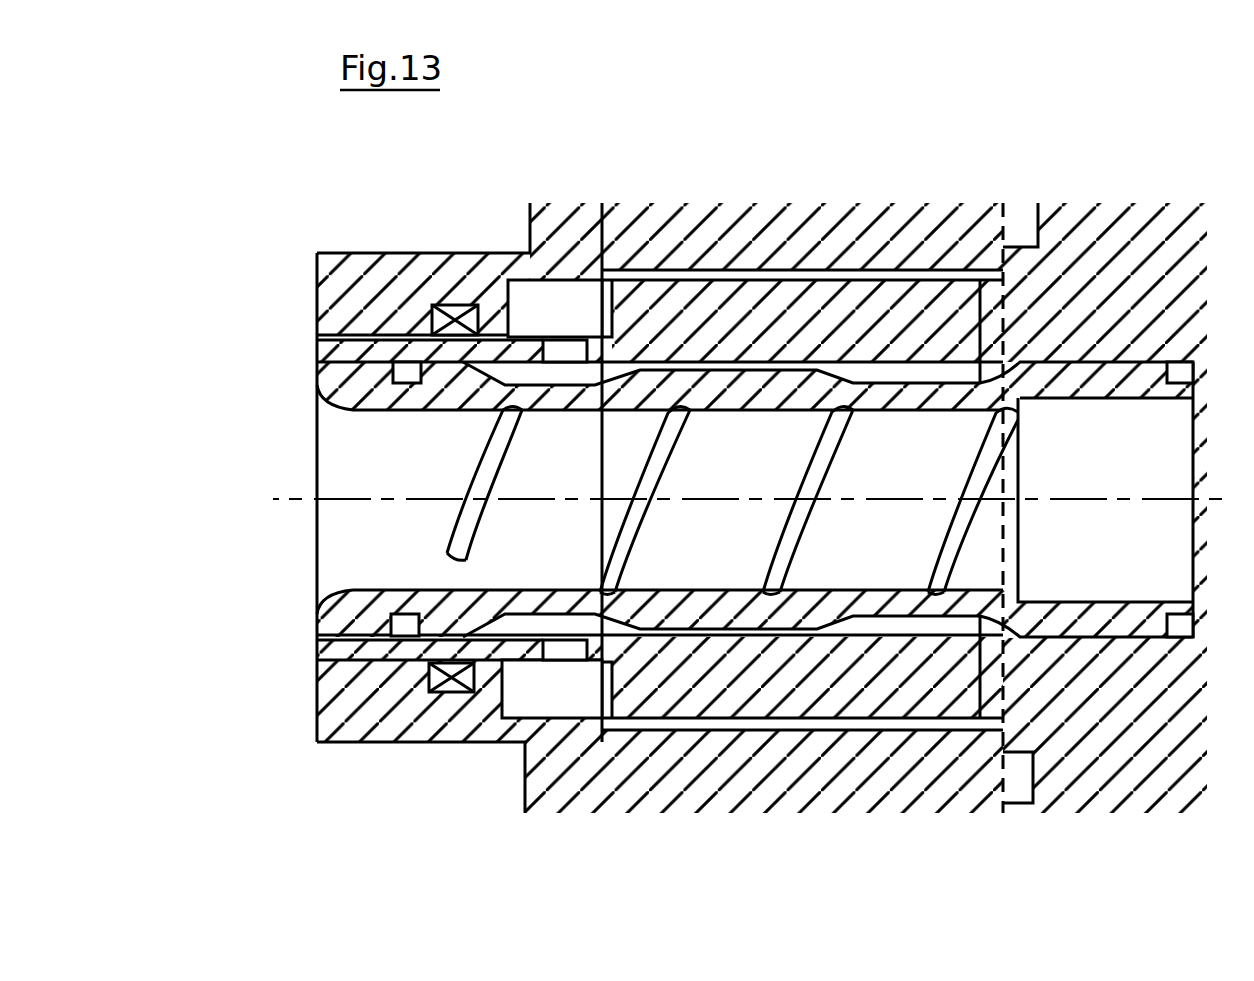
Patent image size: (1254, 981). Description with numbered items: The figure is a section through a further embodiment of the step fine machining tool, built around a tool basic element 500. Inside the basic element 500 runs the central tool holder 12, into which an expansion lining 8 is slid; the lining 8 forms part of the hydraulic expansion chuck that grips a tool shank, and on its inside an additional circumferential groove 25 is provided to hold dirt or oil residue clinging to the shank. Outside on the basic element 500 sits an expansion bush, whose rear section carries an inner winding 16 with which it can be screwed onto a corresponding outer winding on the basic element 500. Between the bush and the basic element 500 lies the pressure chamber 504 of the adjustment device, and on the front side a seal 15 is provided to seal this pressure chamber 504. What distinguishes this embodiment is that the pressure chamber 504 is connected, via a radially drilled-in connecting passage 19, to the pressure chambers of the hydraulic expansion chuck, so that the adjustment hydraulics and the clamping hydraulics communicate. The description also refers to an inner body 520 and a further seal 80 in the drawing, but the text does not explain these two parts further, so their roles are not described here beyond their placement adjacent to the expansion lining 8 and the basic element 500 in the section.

The tool basic element 500 is at (497, 265).
The seal 15 is at (469, 330).
The pressure chamber 504 is at (550, 303).
The inner body 520 is at (767, 317).
The inner winding 16 is at (830, 275).
The expansion lining 8 is at (360, 384).
The central tool holder 12 is at (397, 473).
The circumferential groove 25 is at (447, 543).
The seal 80 is at (503, 640).
The connecting passage 19 is at (556, 645).